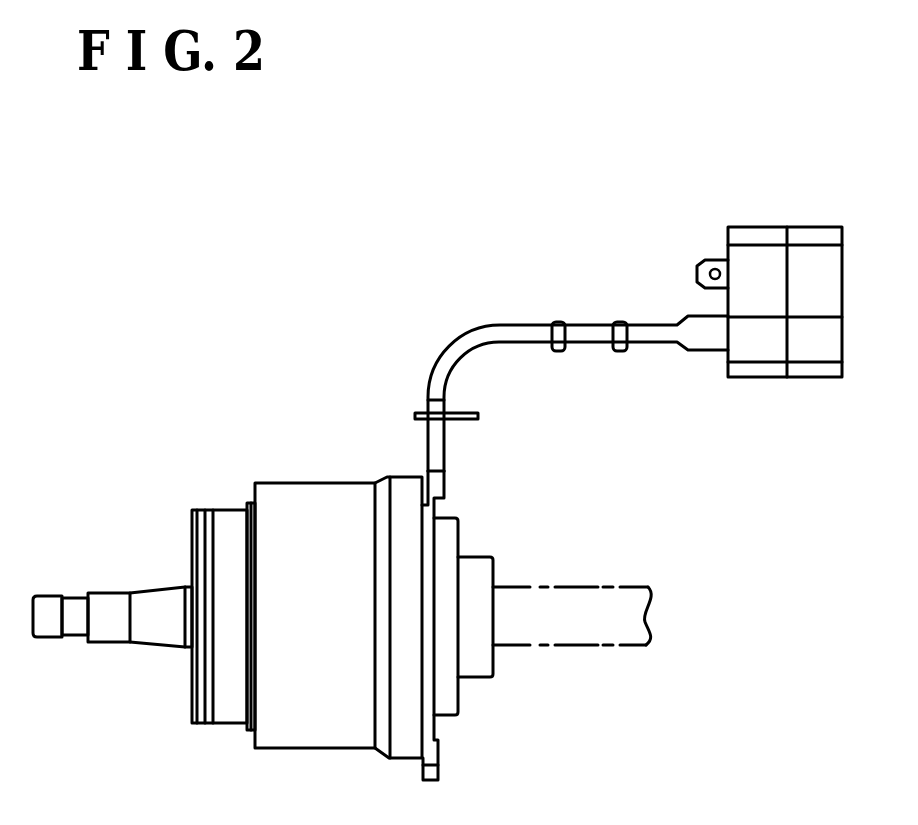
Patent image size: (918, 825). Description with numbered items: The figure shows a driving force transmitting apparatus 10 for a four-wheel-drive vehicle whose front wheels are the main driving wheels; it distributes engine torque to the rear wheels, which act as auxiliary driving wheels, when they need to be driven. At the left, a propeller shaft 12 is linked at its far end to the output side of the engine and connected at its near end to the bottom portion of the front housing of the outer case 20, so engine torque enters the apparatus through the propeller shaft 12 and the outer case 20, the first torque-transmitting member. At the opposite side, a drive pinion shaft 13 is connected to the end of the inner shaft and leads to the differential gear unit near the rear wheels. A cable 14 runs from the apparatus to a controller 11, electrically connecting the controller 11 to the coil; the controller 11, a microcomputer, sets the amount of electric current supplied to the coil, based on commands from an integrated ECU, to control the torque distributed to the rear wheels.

The driving force transmitting apparatus 10 is at (423, 247).
The controller 11 is at (781, 227).
The propeller shaft 12 is at (106, 593).
The drive pinion shaft 13 is at (585, 586).
The cable 14 is at (521, 325).
The outer case 20 is at (205, 510).